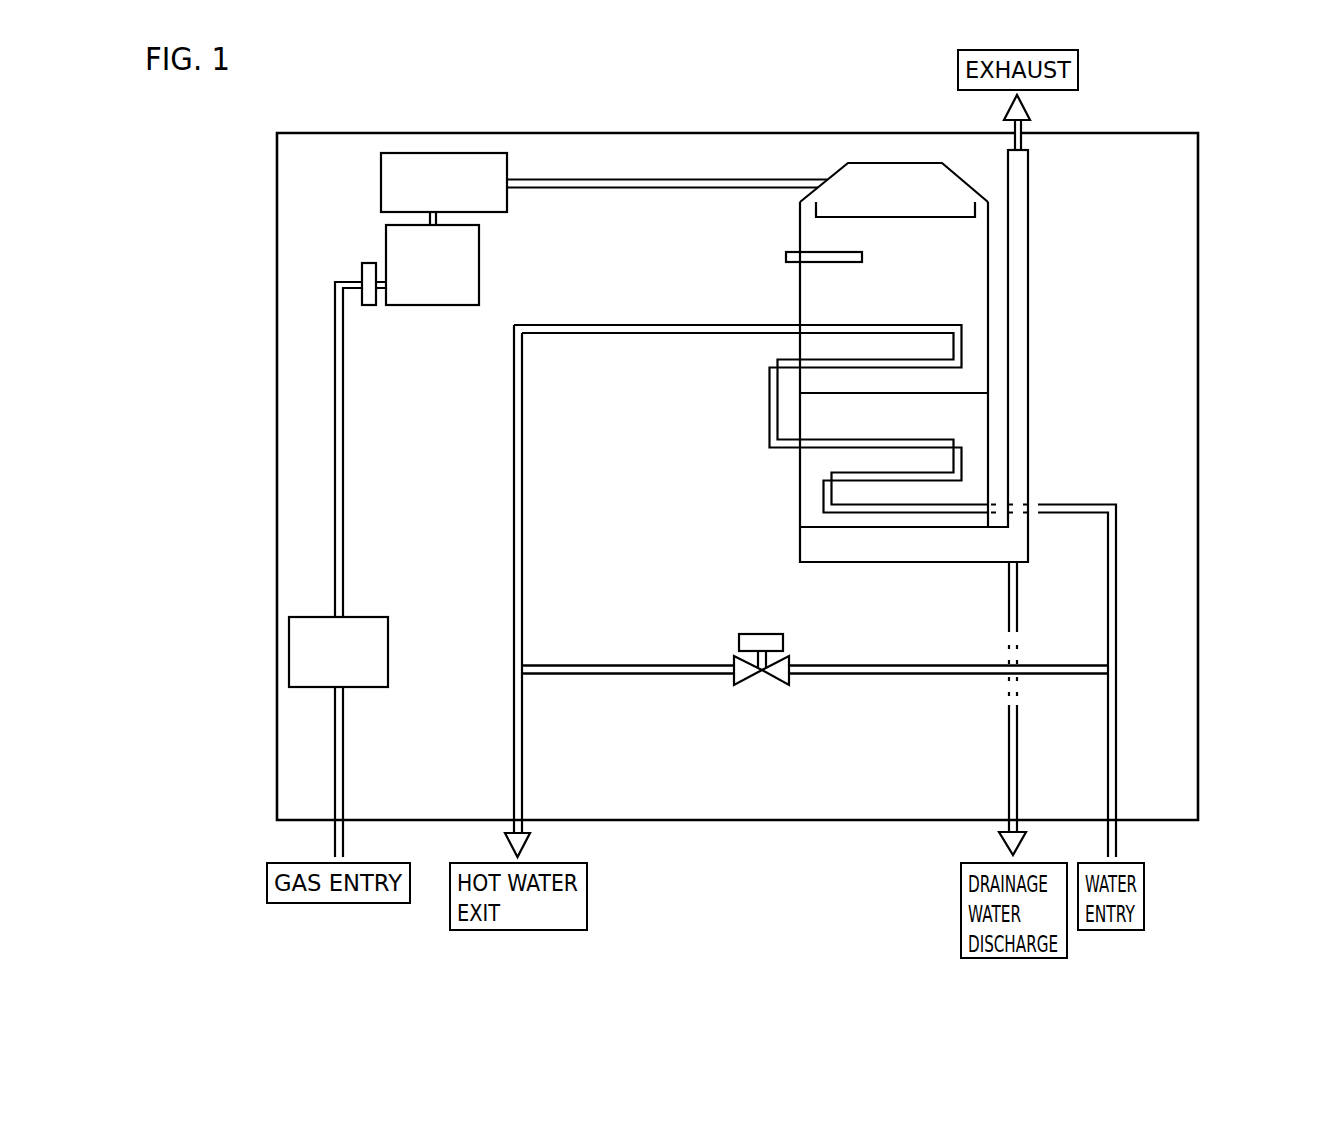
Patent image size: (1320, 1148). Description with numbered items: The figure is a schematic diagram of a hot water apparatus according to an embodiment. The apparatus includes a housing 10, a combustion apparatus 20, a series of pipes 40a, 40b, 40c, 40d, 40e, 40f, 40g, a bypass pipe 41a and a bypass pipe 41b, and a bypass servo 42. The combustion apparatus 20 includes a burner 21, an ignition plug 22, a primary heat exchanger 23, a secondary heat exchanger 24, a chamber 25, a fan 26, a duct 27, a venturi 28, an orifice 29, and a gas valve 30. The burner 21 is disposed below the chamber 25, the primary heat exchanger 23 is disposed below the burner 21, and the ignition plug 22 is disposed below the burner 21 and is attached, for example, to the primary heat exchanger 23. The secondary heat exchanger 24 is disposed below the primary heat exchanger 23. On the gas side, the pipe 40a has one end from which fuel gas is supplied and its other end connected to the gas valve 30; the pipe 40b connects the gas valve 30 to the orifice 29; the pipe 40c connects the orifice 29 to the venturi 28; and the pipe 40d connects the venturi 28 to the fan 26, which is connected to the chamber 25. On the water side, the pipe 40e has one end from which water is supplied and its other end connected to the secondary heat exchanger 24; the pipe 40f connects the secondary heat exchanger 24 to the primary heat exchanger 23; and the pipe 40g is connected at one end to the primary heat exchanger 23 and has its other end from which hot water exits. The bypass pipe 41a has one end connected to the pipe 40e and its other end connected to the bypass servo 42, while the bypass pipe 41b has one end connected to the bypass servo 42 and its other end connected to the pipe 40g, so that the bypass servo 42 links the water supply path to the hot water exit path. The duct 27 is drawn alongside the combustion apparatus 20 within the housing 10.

The housing 10 is at (1198, 266).
The combustion apparatus 20 is at (1066, 411).
The burner 21 is at (829, 208).
The ignition plug 22 is at (788, 257).
The primary heat exchanger 23 is at (797, 307).
The secondary heat exchanger 24 is at (798, 492).
The chamber 25 is at (838, 167).
The fan 26 is at (508, 164).
The duct 27 is at (1029, 342).
The venturi 28 is at (480, 263).
The orifice 29 is at (369, 306).
The gas valve 30 is at (389, 650).
The pipe 40a is at (344, 745).
The pipe 40b is at (344, 498).
The pipe 40c is at (381, 277).
The pipe 40d is at (437, 220).
The pipe 40e is at (1117, 612).
The pipe 40f is at (769, 416).
The pipe 40g is at (523, 528).
The bypass pipe 41a is at (945, 665).
The bypass pipe 41b is at (613, 665).
The bypass servo 42 is at (762, 634).